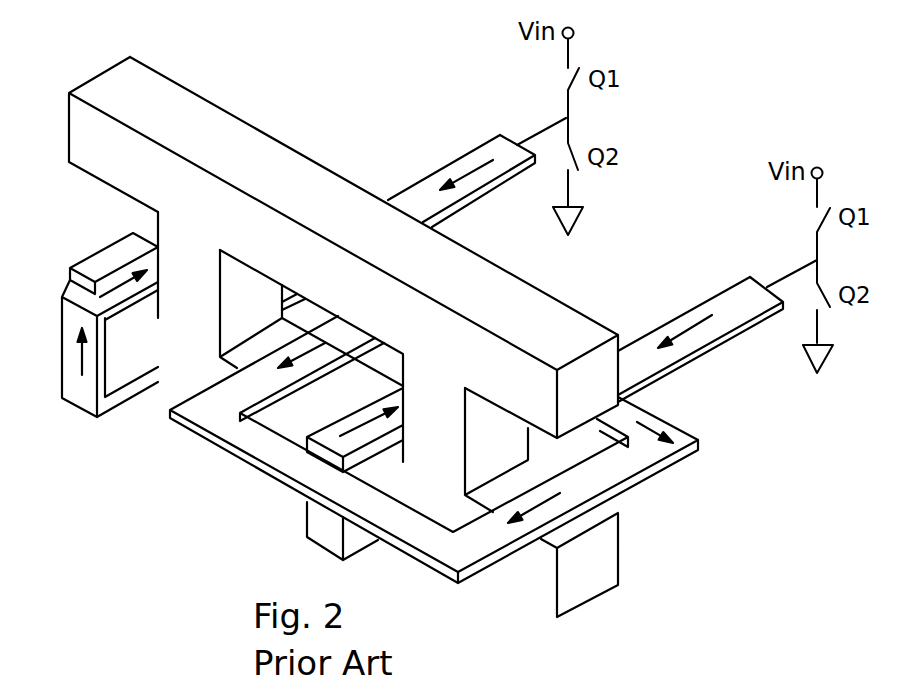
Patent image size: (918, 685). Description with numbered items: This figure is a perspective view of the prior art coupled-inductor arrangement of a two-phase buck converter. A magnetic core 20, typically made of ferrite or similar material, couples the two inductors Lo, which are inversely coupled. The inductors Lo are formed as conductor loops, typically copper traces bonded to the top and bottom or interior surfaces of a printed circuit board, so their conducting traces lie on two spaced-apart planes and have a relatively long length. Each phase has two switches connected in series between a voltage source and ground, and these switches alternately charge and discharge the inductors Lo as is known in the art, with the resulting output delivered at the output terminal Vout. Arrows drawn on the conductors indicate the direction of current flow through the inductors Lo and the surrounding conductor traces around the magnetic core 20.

The magnetic core 20 is at (343, 308).
The output voltage terminal Vout is at (292, 488).
The coupled inductors Lo is at (89, 239).